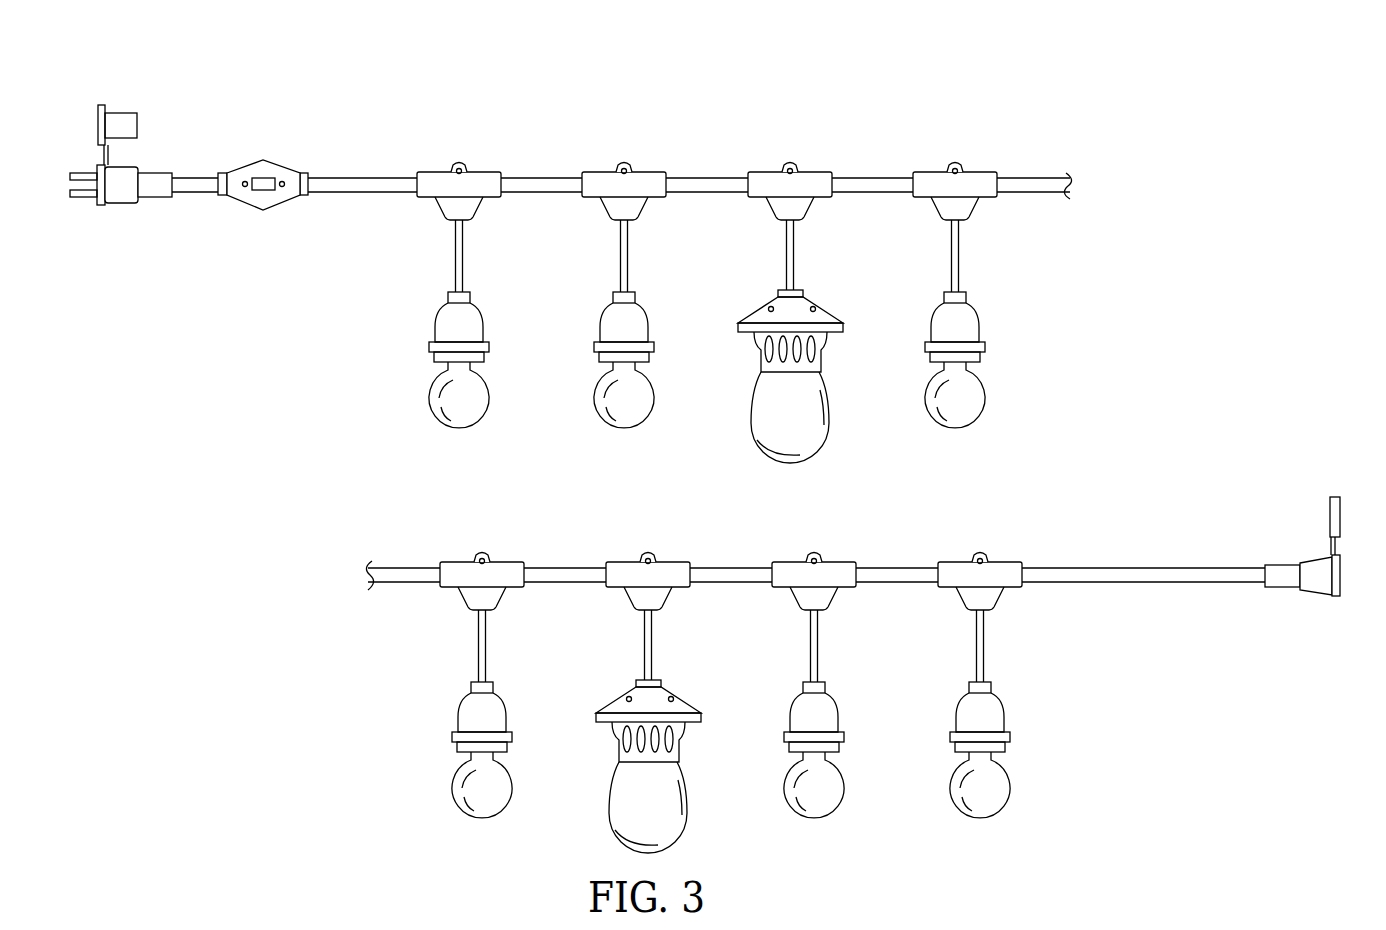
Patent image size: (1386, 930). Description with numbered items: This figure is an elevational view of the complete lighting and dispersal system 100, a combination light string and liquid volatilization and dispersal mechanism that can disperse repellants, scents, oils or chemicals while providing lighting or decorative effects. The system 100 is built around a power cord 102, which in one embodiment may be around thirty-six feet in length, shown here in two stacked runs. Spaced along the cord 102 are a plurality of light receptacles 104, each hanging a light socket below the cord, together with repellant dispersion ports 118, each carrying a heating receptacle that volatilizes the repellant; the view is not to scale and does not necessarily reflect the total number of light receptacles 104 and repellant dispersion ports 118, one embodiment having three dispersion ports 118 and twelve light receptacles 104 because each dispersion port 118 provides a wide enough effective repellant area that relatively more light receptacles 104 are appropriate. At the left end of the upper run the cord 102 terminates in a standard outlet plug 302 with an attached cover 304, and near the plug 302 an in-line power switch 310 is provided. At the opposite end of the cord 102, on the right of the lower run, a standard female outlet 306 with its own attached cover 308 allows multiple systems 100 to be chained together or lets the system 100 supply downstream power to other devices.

The lighting and dispersal system 100 is at (1054, 100).
The power cord 102 is at (377, 178).
The light receptacles 104 is at (443, 152).
The repellant dispersion ports 118 is at (805, 152).
The standard outlet plug 302 is at (102, 207).
The cover 304 is at (120, 112).
The standard female outlet 306 is at (1333, 598).
The cover 308 is at (1332, 497).
The power switch 310 is at (242, 164).